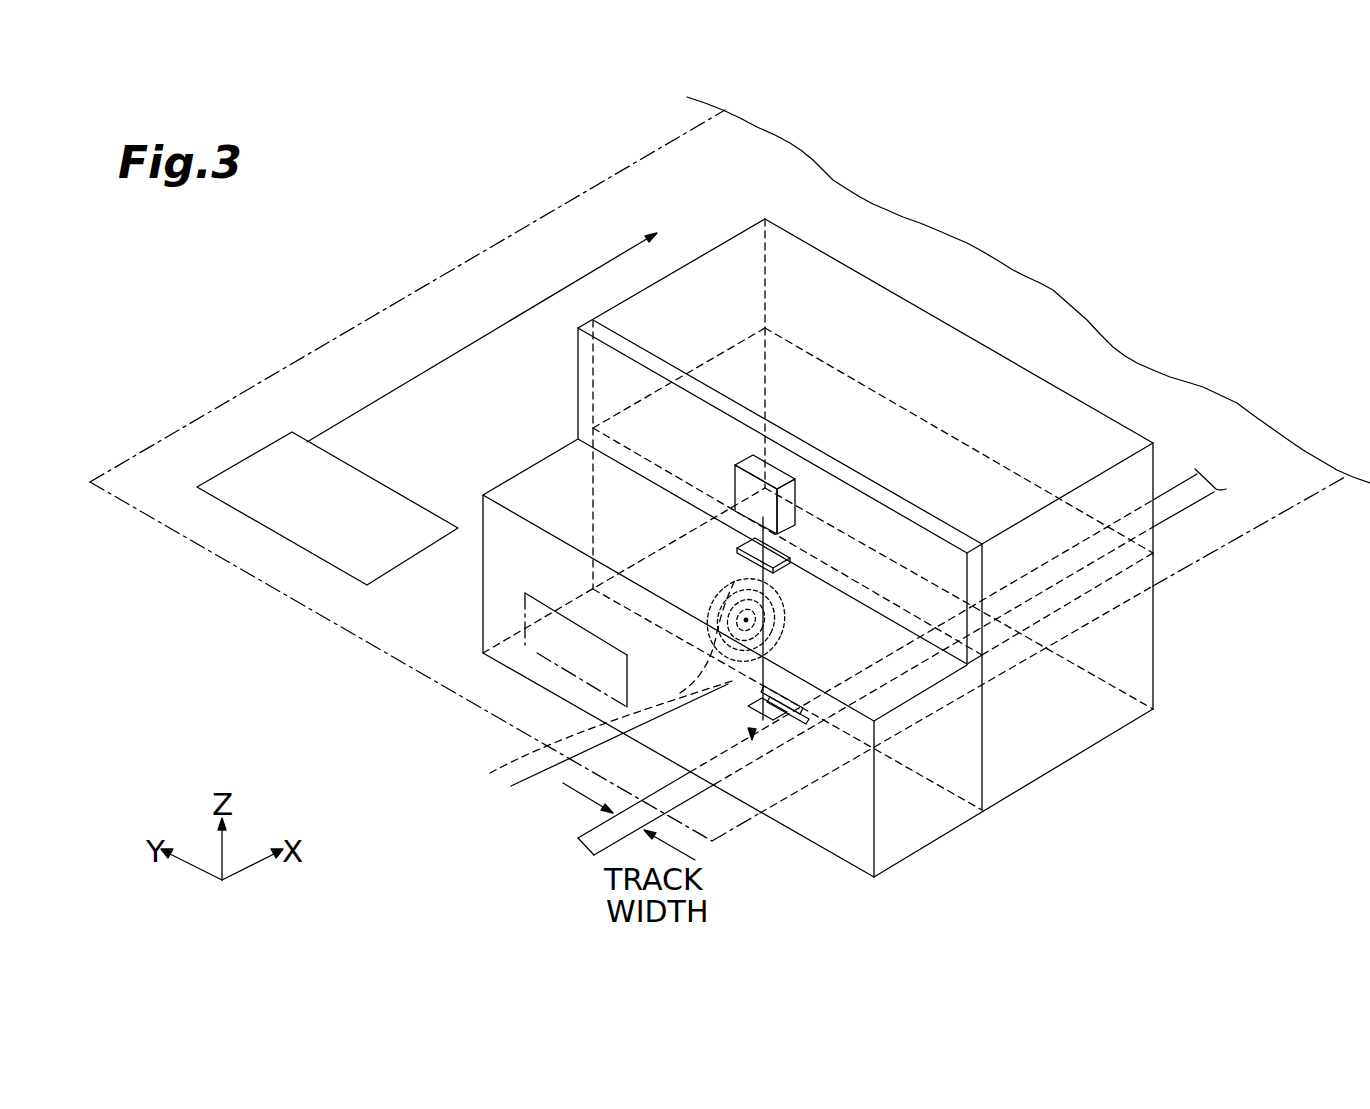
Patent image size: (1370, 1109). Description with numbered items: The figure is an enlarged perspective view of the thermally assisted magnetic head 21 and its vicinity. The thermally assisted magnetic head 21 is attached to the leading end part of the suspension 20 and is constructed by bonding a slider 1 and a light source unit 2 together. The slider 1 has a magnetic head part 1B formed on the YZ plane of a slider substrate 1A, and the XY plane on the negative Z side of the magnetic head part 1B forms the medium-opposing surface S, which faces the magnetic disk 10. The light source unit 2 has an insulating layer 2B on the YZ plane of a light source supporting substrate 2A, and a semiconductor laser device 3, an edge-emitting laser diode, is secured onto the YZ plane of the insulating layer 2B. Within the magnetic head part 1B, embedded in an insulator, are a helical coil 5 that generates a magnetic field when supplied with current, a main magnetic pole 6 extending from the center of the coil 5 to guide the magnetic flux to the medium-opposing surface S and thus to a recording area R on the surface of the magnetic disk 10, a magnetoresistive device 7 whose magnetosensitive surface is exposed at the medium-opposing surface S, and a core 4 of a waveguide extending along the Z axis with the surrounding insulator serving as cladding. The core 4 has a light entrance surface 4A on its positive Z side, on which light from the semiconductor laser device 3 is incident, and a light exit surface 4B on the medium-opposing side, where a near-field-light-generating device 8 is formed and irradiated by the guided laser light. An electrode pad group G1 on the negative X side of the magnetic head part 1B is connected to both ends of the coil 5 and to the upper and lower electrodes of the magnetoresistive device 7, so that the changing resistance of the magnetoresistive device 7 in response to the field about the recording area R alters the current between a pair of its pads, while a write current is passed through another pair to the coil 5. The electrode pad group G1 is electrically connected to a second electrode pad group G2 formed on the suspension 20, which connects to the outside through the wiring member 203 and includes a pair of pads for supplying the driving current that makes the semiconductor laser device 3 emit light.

The slider 1 is at (818, 631).
The slider substrate 1A is at (873, 602).
The magnetic head part 1B is at (940, 837).
The light source unit 2 is at (865, 441).
The light source supporting substrate 2A is at (1040, 461).
The insulating layer 2B is at (780, 492).
The semiconductor laser device 3 is at (746, 490).
The core 4 is at (775, 584).
The light entrance surface 4A is at (750, 548).
The light exit surface 4B is at (786, 722).
The helical coil 5 is at (603, 687).
The main magnetic pole 6 is at (752, 736).
The magnetoresistive device 7 is at (790, 688).
The near-field-light-generating device 8 is at (609, 748).
The magnetic disk 10 is at (578, 838).
The suspension 20 is at (452, 271).
The thermally assisted magnetic head 21 is at (962, 262).
The wiring member 203 is at (428, 371).
The electrode pad group G1 is at (537, 653).
The second electrode pad group G2 is at (407, 563).
The recording area R is at (762, 742).
The medium-opposing surface S is at (848, 868).